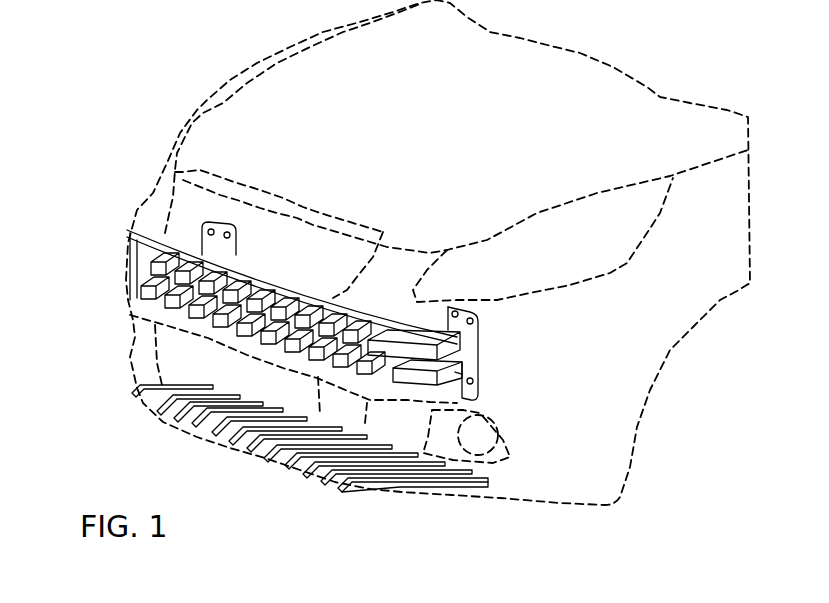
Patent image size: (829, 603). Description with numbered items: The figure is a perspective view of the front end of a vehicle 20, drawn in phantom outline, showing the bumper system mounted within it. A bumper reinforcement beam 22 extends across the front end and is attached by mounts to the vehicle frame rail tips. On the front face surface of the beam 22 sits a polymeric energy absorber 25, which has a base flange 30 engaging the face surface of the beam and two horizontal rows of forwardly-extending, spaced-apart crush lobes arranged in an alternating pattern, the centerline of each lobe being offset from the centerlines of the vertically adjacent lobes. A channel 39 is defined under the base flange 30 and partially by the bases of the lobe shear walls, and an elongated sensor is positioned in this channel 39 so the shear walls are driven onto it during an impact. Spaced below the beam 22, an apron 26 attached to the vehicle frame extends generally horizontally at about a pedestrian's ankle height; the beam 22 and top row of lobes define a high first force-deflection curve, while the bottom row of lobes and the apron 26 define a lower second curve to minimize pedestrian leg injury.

The vehicle 20 is at (198, 74).
The bumper reinforcement beam 22 is at (155, 238).
The energy absorber 25 is at (145, 283).
The apron 26 is at (150, 409).
The base flange 30 is at (445, 375).
The channel 39 is at (443, 372).